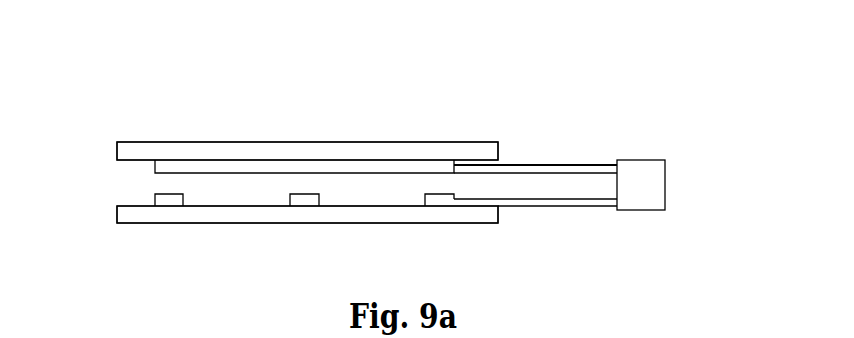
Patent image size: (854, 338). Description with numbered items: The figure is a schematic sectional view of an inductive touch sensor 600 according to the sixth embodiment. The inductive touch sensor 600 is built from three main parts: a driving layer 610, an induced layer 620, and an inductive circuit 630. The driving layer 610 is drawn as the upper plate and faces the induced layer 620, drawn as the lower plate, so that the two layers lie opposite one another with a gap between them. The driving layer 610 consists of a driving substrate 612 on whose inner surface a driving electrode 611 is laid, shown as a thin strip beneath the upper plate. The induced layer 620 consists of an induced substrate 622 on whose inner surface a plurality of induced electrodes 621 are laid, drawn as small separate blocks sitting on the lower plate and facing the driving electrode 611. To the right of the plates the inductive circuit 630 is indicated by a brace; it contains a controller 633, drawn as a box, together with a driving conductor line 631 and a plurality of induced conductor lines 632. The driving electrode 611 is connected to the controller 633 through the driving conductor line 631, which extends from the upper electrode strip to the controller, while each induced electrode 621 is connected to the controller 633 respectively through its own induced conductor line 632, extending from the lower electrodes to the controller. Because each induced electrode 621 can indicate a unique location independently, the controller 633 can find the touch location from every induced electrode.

The inductive touch sensor 600 is at (405, 138).
The driving layer 610 is at (270, 126).
The driving electrode 611 is at (247, 163).
The driving substrate 612 is at (363, 152).
The induced layer 620 is at (269, 235).
The induced electrodes 621 is at (170, 200).
The induced substrate 622 is at (358, 212).
The inductive circuit 630 is at (612, 194).
The driving conductor line 631 is at (545, 164).
The induced conductor lines 632 is at (537, 201).
The controller 633 is at (646, 196).